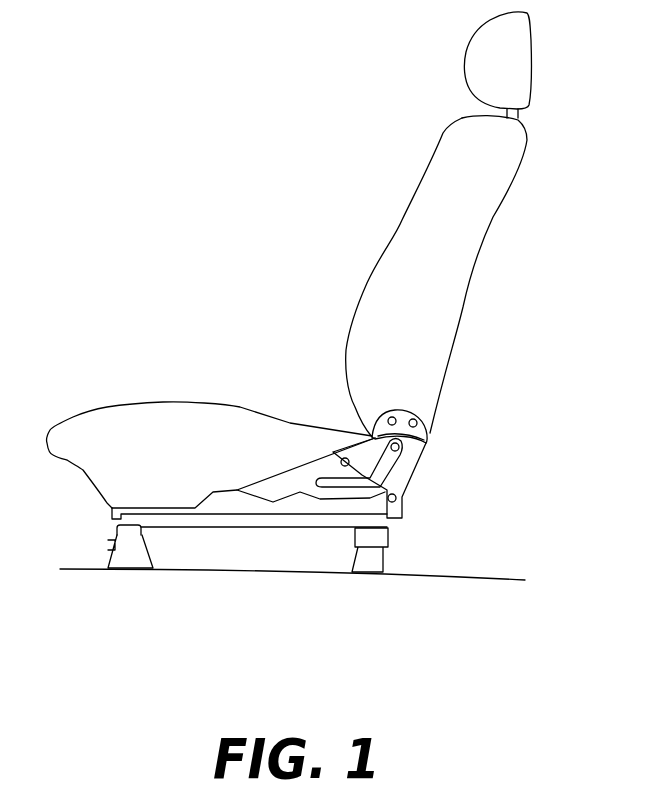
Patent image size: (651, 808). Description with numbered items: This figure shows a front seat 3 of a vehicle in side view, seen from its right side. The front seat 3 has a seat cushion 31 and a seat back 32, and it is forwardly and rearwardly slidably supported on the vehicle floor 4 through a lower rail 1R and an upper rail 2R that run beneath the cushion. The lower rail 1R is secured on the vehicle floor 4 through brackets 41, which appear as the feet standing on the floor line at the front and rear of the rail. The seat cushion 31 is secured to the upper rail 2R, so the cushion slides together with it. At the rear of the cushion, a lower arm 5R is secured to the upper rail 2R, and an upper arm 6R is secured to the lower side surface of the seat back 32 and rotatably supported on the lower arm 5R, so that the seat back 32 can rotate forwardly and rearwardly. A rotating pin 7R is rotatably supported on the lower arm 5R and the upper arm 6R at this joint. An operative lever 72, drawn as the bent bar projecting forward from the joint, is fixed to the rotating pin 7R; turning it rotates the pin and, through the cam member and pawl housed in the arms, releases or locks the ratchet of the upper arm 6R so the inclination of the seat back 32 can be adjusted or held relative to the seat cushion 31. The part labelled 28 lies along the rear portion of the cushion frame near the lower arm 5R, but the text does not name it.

The front seat 3 is at (302, 291).
The seat cushion 31 is at (243, 408).
The seat back 32 is at (438, 320).
The cushion side frame 28 is at (283, 485).
The operative lever 72 is at (335, 478).
The upper arm 6R is at (403, 420).
The rotating pin 7R is at (430, 427).
The lower arm 5R is at (410, 470).
The vehicle floor 4 is at (488, 582).
The bracket 41 is at (108, 542).
The lower rail 1R is at (265, 523).
The upper rail 2R is at (320, 503).